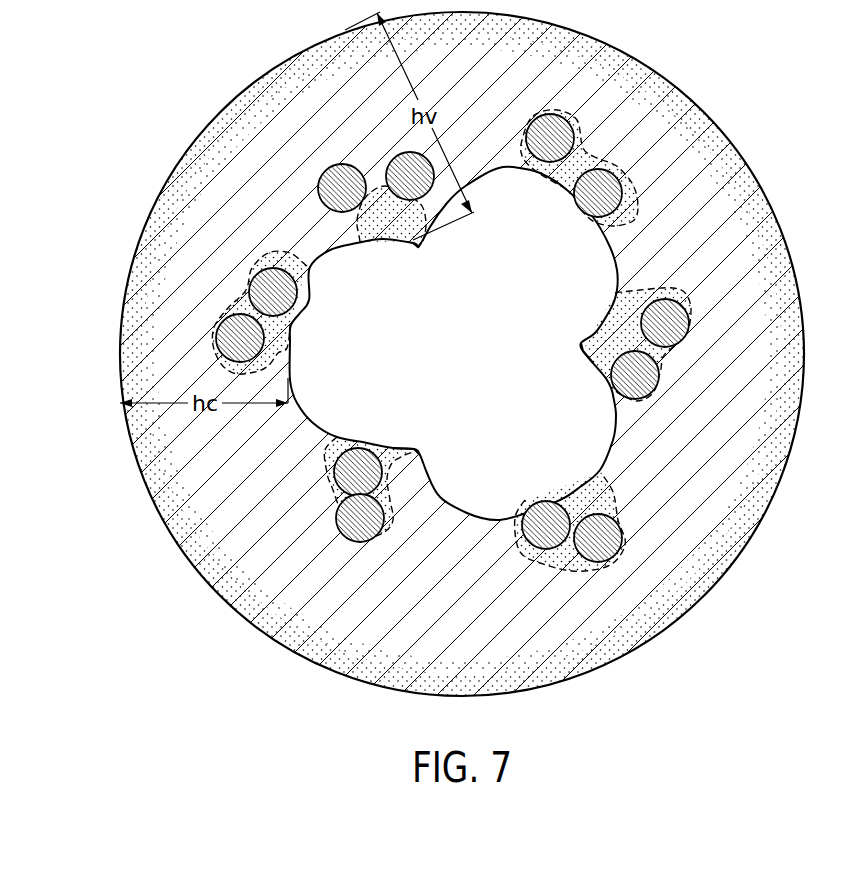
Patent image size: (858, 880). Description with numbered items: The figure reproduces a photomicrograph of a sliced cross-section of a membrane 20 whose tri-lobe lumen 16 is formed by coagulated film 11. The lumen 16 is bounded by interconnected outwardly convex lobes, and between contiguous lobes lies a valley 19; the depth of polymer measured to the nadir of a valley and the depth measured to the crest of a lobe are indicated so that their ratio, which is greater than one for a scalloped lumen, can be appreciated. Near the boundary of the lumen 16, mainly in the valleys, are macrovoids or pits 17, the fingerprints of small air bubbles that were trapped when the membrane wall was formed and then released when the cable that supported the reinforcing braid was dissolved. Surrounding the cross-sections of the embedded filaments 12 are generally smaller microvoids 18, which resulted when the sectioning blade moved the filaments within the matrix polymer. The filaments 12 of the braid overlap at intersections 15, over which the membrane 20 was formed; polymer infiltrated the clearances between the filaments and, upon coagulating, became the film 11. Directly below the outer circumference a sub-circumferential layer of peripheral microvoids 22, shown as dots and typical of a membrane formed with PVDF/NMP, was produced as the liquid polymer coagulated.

The coagulated film 11 is at (690, 432).
The filaments 12 is at (452, 338).
The intersections 15 is at (336, 497).
The central void 16 is at (455, 356).
The macrovoids or pits 17 is at (390, 229).
The microvoids 18 is at (308, 301).
The valley 19 is at (418, 247).
The membrane 20 is at (488, 354).
The peripheral microvoids 22 is at (147, 281).